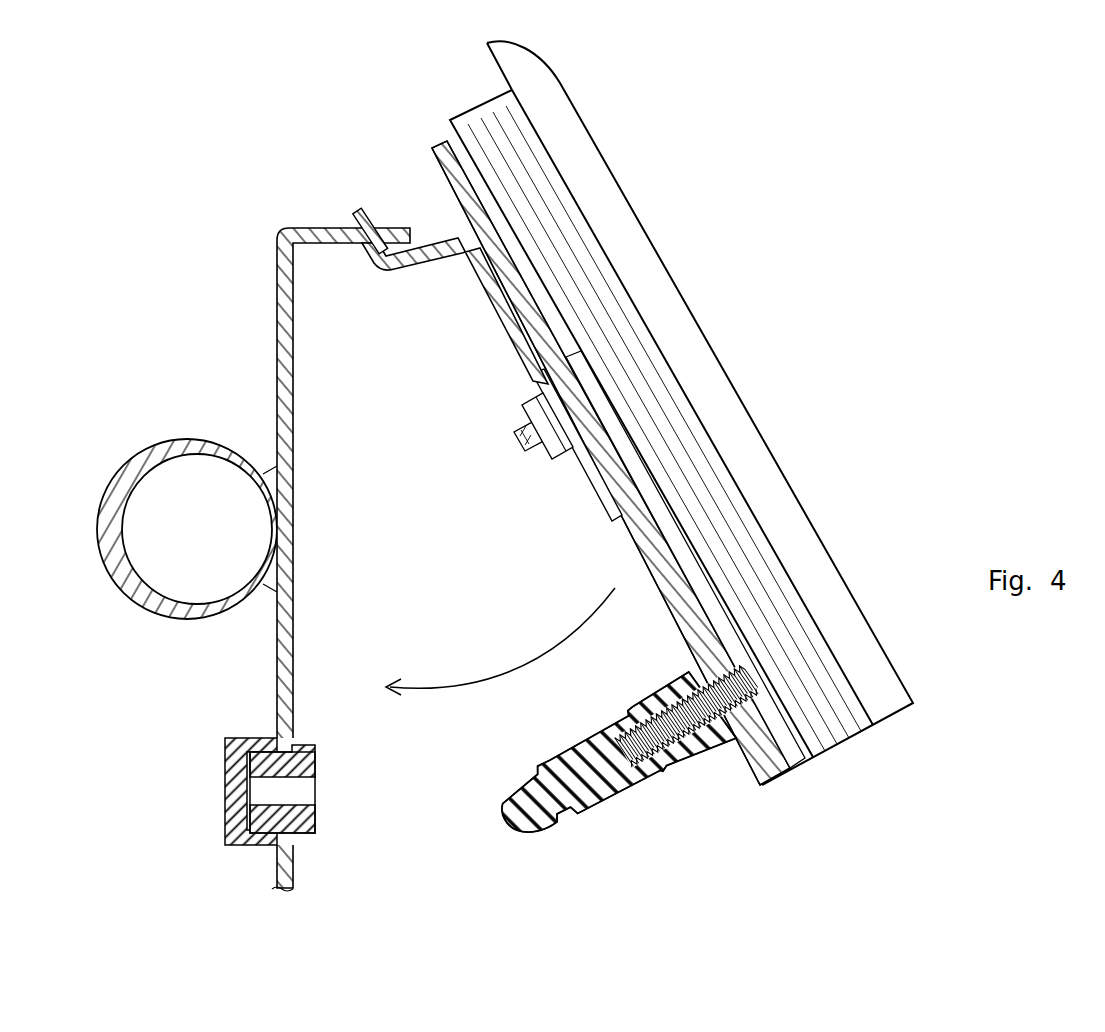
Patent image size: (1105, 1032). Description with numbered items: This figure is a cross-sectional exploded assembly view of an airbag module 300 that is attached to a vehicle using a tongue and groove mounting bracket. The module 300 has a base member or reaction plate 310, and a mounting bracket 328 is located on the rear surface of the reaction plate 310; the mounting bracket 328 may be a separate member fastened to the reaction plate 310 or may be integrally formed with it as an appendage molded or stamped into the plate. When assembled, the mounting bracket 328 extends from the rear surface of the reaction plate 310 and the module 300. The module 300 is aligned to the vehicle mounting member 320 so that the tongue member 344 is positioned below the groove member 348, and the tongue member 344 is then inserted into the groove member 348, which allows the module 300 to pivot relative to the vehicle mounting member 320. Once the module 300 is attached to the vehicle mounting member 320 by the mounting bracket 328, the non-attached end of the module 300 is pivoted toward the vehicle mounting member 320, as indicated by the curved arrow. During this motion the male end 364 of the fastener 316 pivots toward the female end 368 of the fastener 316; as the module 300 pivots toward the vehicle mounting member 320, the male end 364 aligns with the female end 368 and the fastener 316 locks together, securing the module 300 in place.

The module 300 is at (729, 394).
The reaction plate 310 is at (789, 770).
The fastener 316 is at (498, 822).
The vehicle mounting member 320 is at (270, 876).
The mounting bracket 328 is at (600, 493).
The tongue member 344 is at (356, 210).
The groove member 348 is at (360, 245).
The male end 364 is at (632, 783).
The female end 368 is at (272, 862).